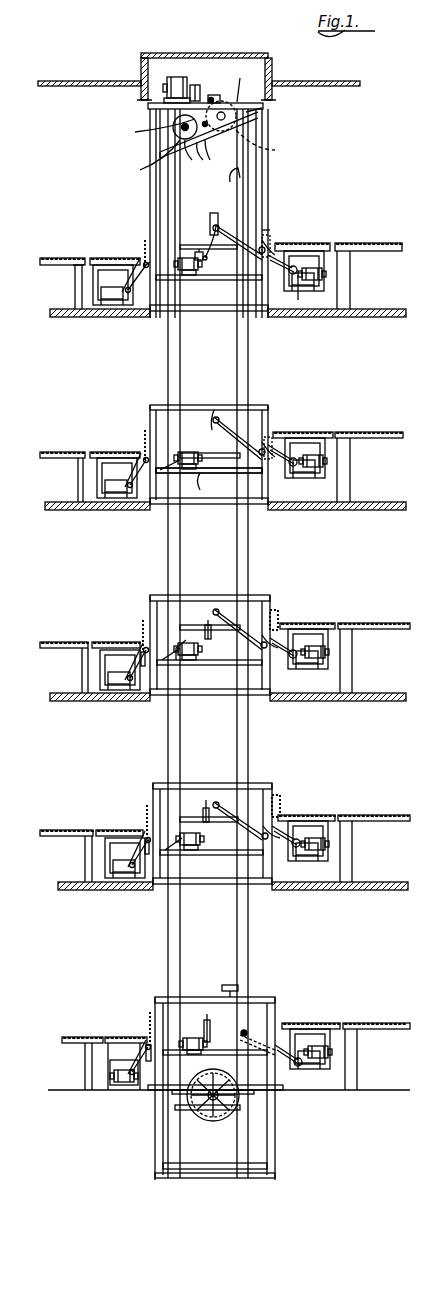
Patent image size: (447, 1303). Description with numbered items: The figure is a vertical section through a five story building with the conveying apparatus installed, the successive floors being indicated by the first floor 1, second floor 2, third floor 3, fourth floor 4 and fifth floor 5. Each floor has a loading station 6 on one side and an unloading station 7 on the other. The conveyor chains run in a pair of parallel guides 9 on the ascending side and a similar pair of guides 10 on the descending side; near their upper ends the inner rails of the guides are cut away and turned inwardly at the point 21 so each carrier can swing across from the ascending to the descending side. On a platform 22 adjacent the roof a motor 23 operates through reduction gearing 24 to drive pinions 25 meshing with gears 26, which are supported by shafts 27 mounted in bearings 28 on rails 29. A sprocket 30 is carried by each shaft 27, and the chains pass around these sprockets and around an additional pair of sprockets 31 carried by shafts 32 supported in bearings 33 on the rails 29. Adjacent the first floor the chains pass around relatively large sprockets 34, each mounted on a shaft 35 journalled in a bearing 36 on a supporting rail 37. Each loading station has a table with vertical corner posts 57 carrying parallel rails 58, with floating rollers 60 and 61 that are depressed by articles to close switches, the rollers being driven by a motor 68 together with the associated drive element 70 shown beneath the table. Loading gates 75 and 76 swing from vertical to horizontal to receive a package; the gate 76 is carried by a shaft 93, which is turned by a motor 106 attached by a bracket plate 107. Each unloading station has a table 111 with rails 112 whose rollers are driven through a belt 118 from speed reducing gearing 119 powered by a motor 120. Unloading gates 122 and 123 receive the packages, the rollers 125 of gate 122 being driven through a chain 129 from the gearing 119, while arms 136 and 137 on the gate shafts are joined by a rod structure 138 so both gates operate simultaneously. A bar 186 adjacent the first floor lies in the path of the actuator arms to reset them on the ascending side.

The first floor 1 is at (400, 1090).
The second floor 2 is at (392, 882).
The third floor 3 is at (386, 694).
The fourth floor 4 is at (380, 508).
The fifth floor 5 is at (392, 309).
The loading station 6 is at (100, 450).
The unloading station 7 is at (339, 621).
The guides on ascending side 9 is at (160, 355).
The guides on descending side 10 is at (255, 372).
The cut away and inwardly turned portion of guides 21 is at (228, 178).
The platform 22 is at (257, 111).
The motor 23 is at (177, 77).
The reduction gearing 24 is at (204, 85).
The pinions 25 is at (211, 97).
The gears 26 is at (240, 100).
The shafts 27 is at (210, 136).
The bearings 28 is at (229, 104).
The rails 29 is at (205, 157).
The sprocket 30 is at (264, 140).
The sprockets 31 is at (189, 157).
The shafts 32 is at (135, 132).
The bearings 33 is at (140, 170).
The large sprockets 34 is at (216, 1123).
The shaft 35 is at (211, 1100).
The bearing 36 is at (240, 1106).
The supporting rail 37 is at (180, 1112).
The corner posts 57 is at (146, 694).
The rails 58 is at (100, 642).
The floating roller 60 is at (104, 258).
The floating roller 61 is at (120, 268).
The motor 68 is at (114, 690).
The conveyor drive shaft 70 is at (133, 878).
The loading gate 75 is at (144, 240).
The loading gate 76 is at (208, 618).
The shaft 93 is at (209, 673).
The motor 106 is at (180, 250).
The bracket plate 107 is at (185, 660).
The table 111 is at (278, 307).
The rails 112 is at (320, 243).
The belt 118 is at (294, 265).
The speed reducing gearing 119 is at (300, 300).
The motor 120 is at (305, 282).
The unloading gate 122 is at (282, 612).
The unloading gate 123 is at (224, 612).
The rollers 125 is at (280, 616).
The chain 129 is at (272, 240).
The arm 136 is at (272, 222).
The arm 137 is at (212, 238).
The rod structure 138 is at (216, 224).
The bar 186 is at (238, 985).